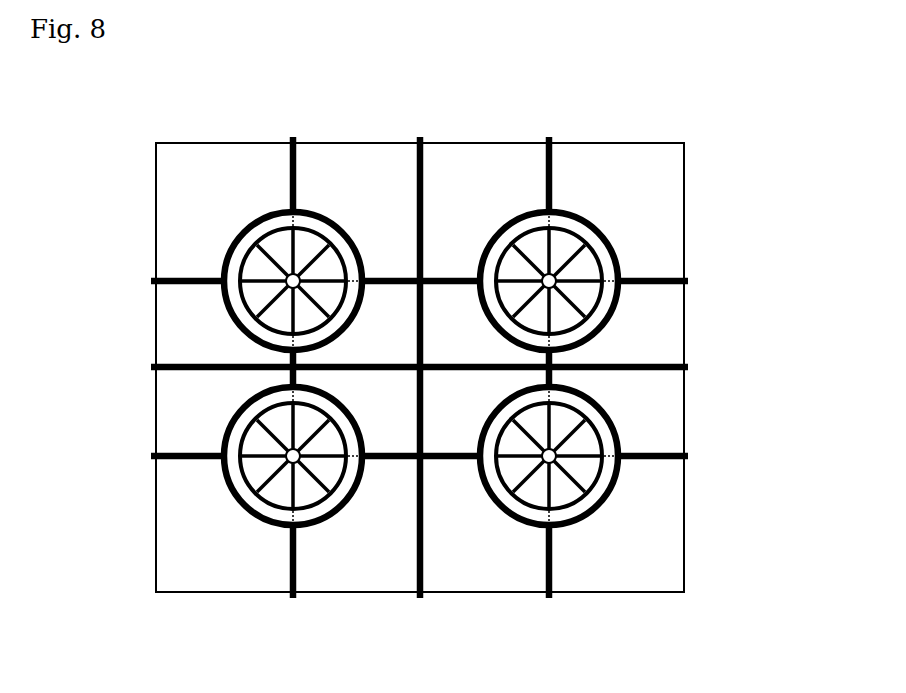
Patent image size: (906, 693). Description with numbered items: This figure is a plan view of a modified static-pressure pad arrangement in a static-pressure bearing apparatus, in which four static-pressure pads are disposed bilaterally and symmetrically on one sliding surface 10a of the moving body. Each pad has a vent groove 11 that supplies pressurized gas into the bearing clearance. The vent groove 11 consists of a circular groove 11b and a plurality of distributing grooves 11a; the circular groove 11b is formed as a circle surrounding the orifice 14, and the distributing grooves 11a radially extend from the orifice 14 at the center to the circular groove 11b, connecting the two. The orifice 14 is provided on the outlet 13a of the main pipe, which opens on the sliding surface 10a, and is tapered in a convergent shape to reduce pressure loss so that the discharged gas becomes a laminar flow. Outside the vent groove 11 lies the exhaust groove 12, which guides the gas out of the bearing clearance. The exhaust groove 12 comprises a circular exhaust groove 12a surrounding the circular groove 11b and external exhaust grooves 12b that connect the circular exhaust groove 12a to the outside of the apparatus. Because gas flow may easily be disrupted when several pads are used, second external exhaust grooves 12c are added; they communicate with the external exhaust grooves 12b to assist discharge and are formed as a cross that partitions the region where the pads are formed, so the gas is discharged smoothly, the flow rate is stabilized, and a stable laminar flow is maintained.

The sliding surface 10a is at (663, 199).
The vent groove 11 is at (222, 219).
The distributing grooves 11a is at (279, 475).
The circular groove 11b is at (315, 510).
The exhaust groove 12 is at (230, 237).
The circular exhaust groove 12a is at (240, 510).
The external exhaust grooves 12b is at (181, 460).
The second external exhaust grooves 12c is at (663, 372).
The outlet 13a is at (252, 278).
The orifice 14 is at (288, 281).